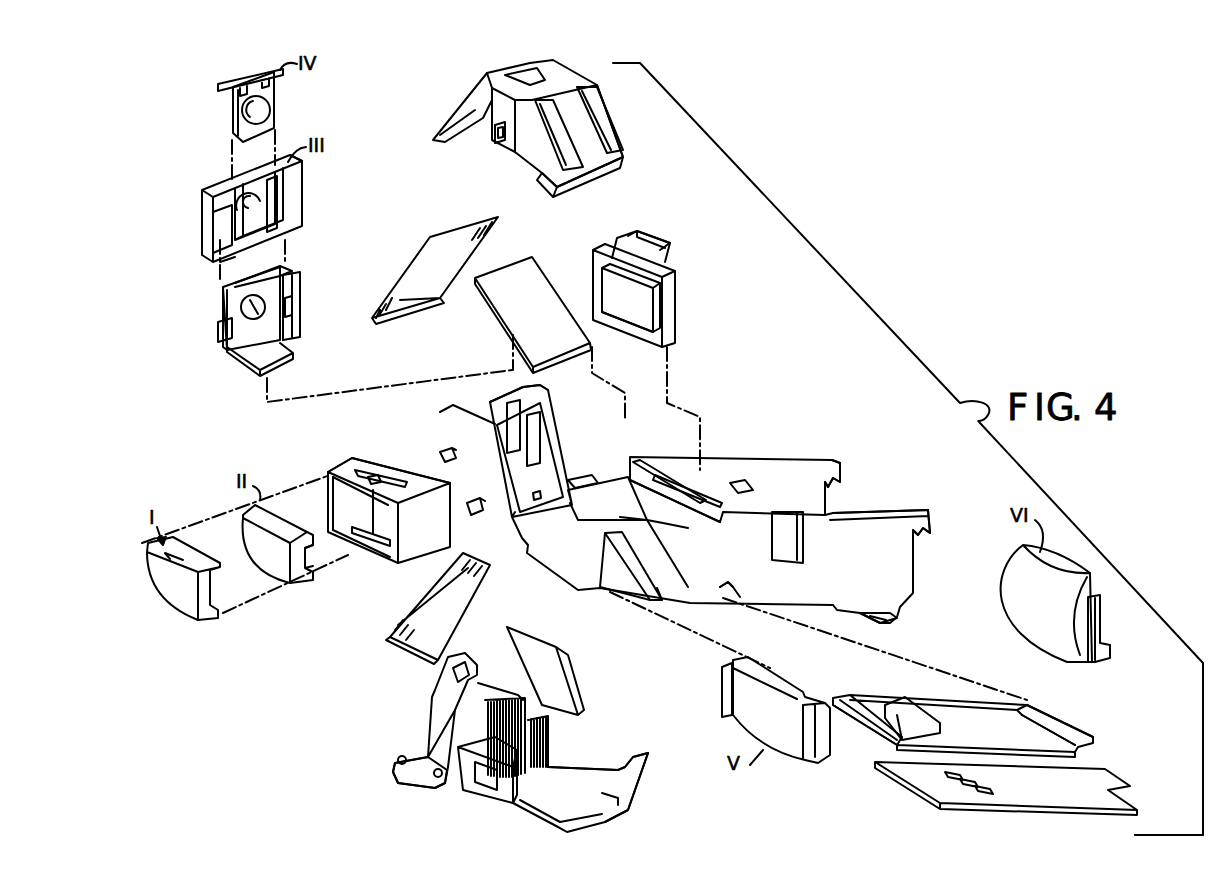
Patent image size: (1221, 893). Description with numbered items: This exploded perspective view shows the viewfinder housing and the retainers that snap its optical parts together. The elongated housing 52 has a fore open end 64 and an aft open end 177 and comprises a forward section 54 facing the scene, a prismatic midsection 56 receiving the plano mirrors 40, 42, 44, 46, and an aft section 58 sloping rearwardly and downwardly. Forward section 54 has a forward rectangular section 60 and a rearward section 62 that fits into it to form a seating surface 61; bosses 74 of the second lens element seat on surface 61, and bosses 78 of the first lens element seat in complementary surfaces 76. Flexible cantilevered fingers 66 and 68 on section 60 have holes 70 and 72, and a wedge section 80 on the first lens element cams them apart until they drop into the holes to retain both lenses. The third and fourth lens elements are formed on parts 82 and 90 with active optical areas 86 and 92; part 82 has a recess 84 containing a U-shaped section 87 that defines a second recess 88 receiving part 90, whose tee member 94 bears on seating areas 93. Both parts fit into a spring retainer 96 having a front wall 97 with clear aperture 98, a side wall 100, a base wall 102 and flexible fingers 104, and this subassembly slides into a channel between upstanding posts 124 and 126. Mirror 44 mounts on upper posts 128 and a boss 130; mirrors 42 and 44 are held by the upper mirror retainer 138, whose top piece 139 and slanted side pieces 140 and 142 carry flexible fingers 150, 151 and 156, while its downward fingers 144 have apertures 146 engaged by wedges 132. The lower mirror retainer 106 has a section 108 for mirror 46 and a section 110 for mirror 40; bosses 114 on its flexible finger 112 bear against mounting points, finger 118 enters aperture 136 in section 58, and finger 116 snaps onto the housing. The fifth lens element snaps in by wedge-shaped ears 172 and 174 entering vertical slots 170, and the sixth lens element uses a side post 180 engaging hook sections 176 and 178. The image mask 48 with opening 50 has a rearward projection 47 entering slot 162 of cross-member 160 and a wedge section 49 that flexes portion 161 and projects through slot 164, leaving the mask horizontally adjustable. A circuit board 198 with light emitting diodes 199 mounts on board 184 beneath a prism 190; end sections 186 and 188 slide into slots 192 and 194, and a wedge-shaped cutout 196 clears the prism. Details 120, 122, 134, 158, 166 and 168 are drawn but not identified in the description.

The plano mirror 40 is at (410, 637).
The plano mirror 42 is at (413, 258).
The plano mirror 44 is at (530, 258).
The plano mirror 46 is at (576, 676).
The rearward projection 47 is at (653, 257).
The image mask 48 is at (675, 297).
The wedge section 49 is at (650, 232).
The opening 50 is at (627, 312).
The elongated housing 52 is at (762, 458).
The forward housing section 54 is at (413, 535).
The prismatic midsection 56 is at (553, 527).
The aft housing section 58 is at (804, 583).
The forward rectangular section 60 is at (350, 465).
The seating surface 61 is at (345, 516).
The rearward rectangular section 62 is at (392, 462).
The open end 64 is at (350, 492).
The flexible cantilevered finger 66 is at (433, 452).
The flexible cantilevered finger 68 is at (372, 552).
The hole 70 is at (373, 476).
The hole 72 is at (390, 517).
The bosses 74 is at (310, 537).
The complementary configured surfaces 76 is at (245, 513).
The bosses 78 is at (212, 562).
The wedge section 80 is at (185, 557).
The lens part 82 is at (292, 210).
The recess 84 is at (260, 180).
The active optical area 86 is at (242, 213).
The U-shaped section 87 is at (280, 217).
The second recess 88 is at (230, 272).
The lens part 90 is at (275, 110).
The active optical area 92 is at (247, 120).
The seating areas 93 is at (292, 174).
The tee member 94 is at (243, 76).
The spring retainer 96 is at (223, 283).
The vertical front wall 97 is at (292, 278).
The clear aperture 98 is at (256, 320).
The vertical side wall 100 is at (300, 296).
The horizontal base wall 102 is at (277, 365).
The flexible fingers 104 is at (218, 330).
The lower mirror retainer 106 is at (632, 824).
The retainer section 108 is at (581, 771).
The retainer section 110 is at (448, 708).
The flexible finger 112 is at (415, 783).
The bosses 114 is at (400, 756).
The flexible finger 116 is at (470, 662).
The flexible finger 118 is at (645, 768).
The ribbed wall 120 is at (524, 784).
The box 122 is at (496, 793).
The upstanding post 124 is at (484, 402).
The upstanding post 126 is at (520, 403).
The upper posts 128 is at (540, 422).
The boss 130 is at (541, 492).
The wedges 132 is at (443, 450).
The small block 134 is at (474, 500).
The aperture 136 is at (613, 555).
The upper mirror retainer 138 is at (585, 67).
The top piece 139 is at (565, 174).
The slanted side piece 140 is at (600, 146).
The slanted side piece 142 is at (466, 95).
The flexible fingers 144 is at (506, 148).
The apertures 146 is at (493, 141).
The flexible finger 150 is at (575, 113).
The flexible finger 151 is at (640, 152).
The flexible finger 156 is at (580, 168).
The top slot 158 is at (530, 70).
The cross-member 160 is at (697, 462).
The flexible portion 161 is at (680, 480).
The slot 162 is at (650, 470).
The slot 164 is at (690, 485).
The lip 166 is at (680, 525).
The slot 168 is at (590, 480).
The vertical slots 170 is at (790, 537).
The wedge-shaped ear 172 is at (820, 740).
The wedge-shaped ear 174 is at (718, 698).
The hook section 176 is at (933, 513).
The open end 177 is at (880, 491).
The hook section 178 is at (843, 470).
The side post 180 is at (1097, 622).
The mounting board 184 is at (947, 713).
The elongated end section 186 is at (1068, 722).
The elongated end section 188 is at (850, 718).
The prism 190 is at (903, 708).
The slot 192 is at (895, 619).
The slot 194 is at (661, 602).
The wedge shaped cutout 196 is at (723, 592).
The circuit board 198 is at (993, 805).
The light emitting diodes 199 is at (990, 780).